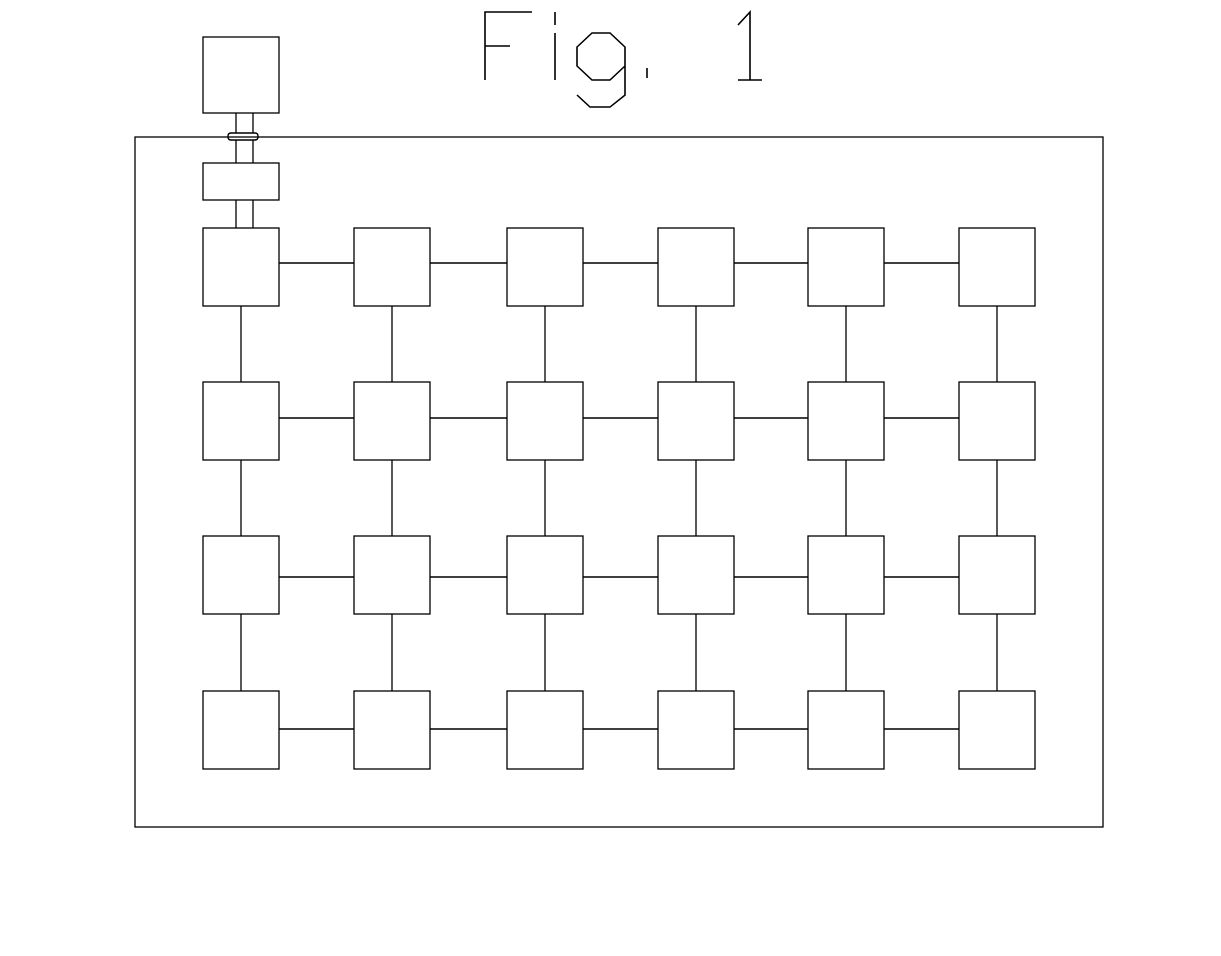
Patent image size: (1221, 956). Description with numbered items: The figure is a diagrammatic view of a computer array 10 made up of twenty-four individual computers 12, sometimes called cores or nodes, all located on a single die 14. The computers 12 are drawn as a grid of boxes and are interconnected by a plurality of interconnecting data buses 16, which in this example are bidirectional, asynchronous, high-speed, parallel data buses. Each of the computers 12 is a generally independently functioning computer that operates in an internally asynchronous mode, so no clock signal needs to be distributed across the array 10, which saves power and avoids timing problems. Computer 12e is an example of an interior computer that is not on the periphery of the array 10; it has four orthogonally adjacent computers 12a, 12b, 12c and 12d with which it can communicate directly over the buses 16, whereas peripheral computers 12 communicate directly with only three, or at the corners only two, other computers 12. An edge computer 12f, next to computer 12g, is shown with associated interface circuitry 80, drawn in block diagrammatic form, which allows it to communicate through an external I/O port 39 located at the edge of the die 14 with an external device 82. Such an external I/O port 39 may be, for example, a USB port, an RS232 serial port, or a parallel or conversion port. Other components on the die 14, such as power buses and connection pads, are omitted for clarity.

The computer array 10 is at (1118, 352).
The computers 12 is at (1023, 265).
The computer 12a is at (518, 283).
The computer 12b is at (669, 437).
The computer 12c is at (365, 437).
The computer 12d is at (518, 591).
The computer 12e is at (518, 437).
The edge computer 12f is at (214, 283).
The computer 12g is at (365, 283).
The die 14 is at (393, 200).
The interconnecting data buses 16 is at (773, 418).
The external I/O port 39 is at (258, 137).
The interface circuitry 80 is at (210, 177).
The external device 82 is at (222, 88).